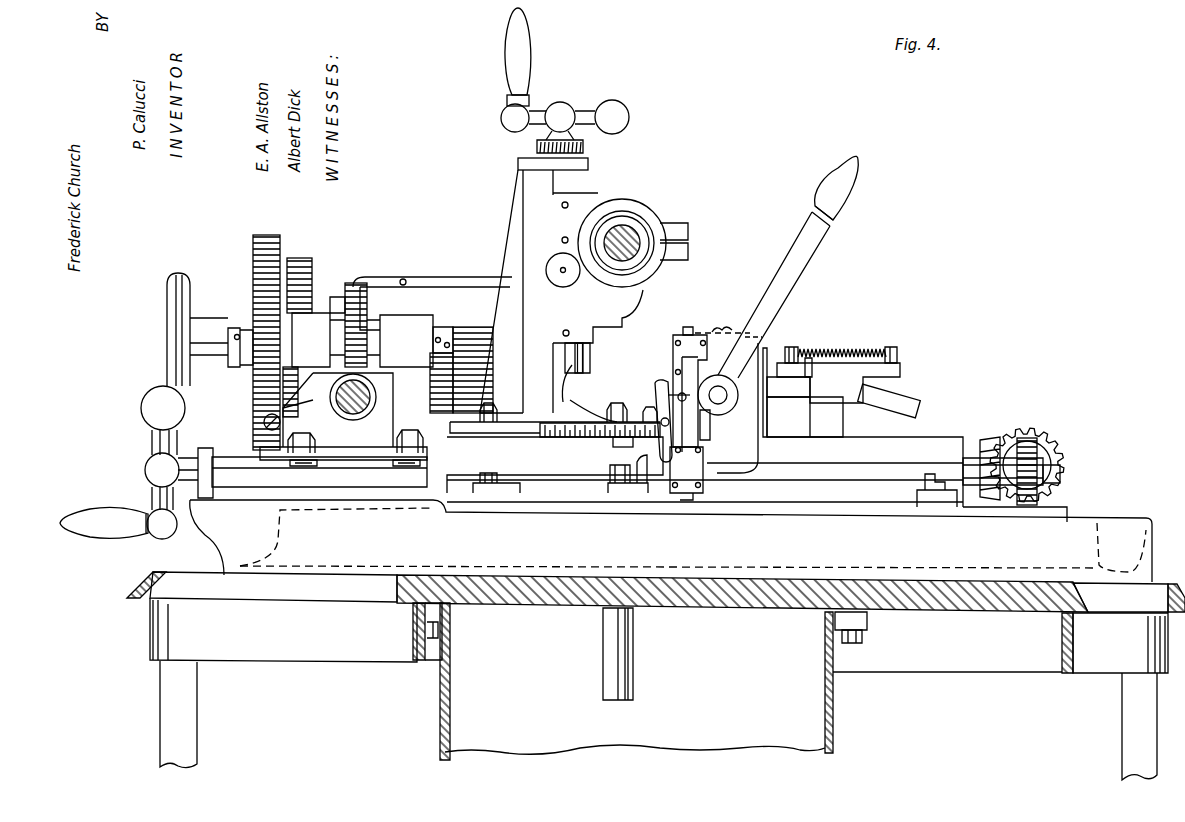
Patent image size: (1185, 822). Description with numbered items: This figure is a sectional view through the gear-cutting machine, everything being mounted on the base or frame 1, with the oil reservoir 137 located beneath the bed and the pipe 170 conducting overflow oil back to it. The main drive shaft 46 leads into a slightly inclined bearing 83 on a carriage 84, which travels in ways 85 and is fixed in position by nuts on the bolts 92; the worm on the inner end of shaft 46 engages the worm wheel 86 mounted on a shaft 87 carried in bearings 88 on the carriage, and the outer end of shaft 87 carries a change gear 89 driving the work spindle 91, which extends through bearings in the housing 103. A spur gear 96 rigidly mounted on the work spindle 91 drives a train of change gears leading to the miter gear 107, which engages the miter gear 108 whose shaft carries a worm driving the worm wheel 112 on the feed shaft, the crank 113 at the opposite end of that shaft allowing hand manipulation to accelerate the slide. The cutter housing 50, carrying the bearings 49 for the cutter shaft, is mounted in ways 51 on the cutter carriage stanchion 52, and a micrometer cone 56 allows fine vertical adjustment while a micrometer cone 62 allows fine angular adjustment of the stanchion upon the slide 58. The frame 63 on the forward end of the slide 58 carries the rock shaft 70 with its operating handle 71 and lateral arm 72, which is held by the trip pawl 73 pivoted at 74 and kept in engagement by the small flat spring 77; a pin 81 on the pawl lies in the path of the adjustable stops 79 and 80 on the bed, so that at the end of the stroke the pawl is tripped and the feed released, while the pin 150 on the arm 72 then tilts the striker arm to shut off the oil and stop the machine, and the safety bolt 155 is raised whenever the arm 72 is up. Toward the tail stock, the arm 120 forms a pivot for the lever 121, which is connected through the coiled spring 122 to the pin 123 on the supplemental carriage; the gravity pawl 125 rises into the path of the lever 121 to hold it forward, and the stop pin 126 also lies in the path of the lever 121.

The base or frame 1 is at (1063, 676).
The main drive shaft 46 is at (348, 416).
The bearings 49 is at (653, 218).
The cutter-housing 50 is at (594, 283).
The ways 51 is at (563, 402).
The cutter carriage stanchion 52 is at (534, 285).
The micrometer cone 56 is at (586, 152).
The slide 58 is at (555, 448).
The micrometer cone 62 is at (586, 433).
The frame 63 is at (673, 352).
The rock-shaft 70 is at (722, 395).
The operating handle 71 is at (796, 281).
The lateral arm 72 is at (700, 412).
The trip pawl 73 is at (660, 405).
The pivot 74 is at (667, 433).
The flat spring 77 is at (696, 436).
The stop 79 is at (628, 477).
The stop 80 is at (935, 502).
The pin 81 is at (686, 473).
The inclined bearing 83 is at (340, 404).
The carriage 84 is at (319, 430).
The ways 85 is at (302, 467).
The worm wheel 86 is at (355, 287).
The shaft 87 is at (233, 353).
The bearings 88 is at (362, 340).
The gear 89 is at (275, 230).
The work spindle 91 is at (205, 320).
The bolts 92 is at (302, 434).
The spur gear 96 is at (301, 258).
The housing 103 is at (433, 286).
The miter gear 107 is at (994, 437).
The miter gear 108 is at (1047, 431).
The worm wheel 112 is at (1040, 446).
The crank 113 is at (155, 441).
The arm 120 is at (863, 427).
The lever 121 is at (771, 370).
The coiled spring 122 is at (858, 350).
The pin 123 is at (900, 366).
The gravity pawl 125 is at (889, 401).
The stop pin 126 is at (812, 367).
The reservoir 137 is at (716, 745).
The pin 150 is at (681, 394).
The bolt 155 is at (700, 325).
The pipe 170 is at (634, 655).